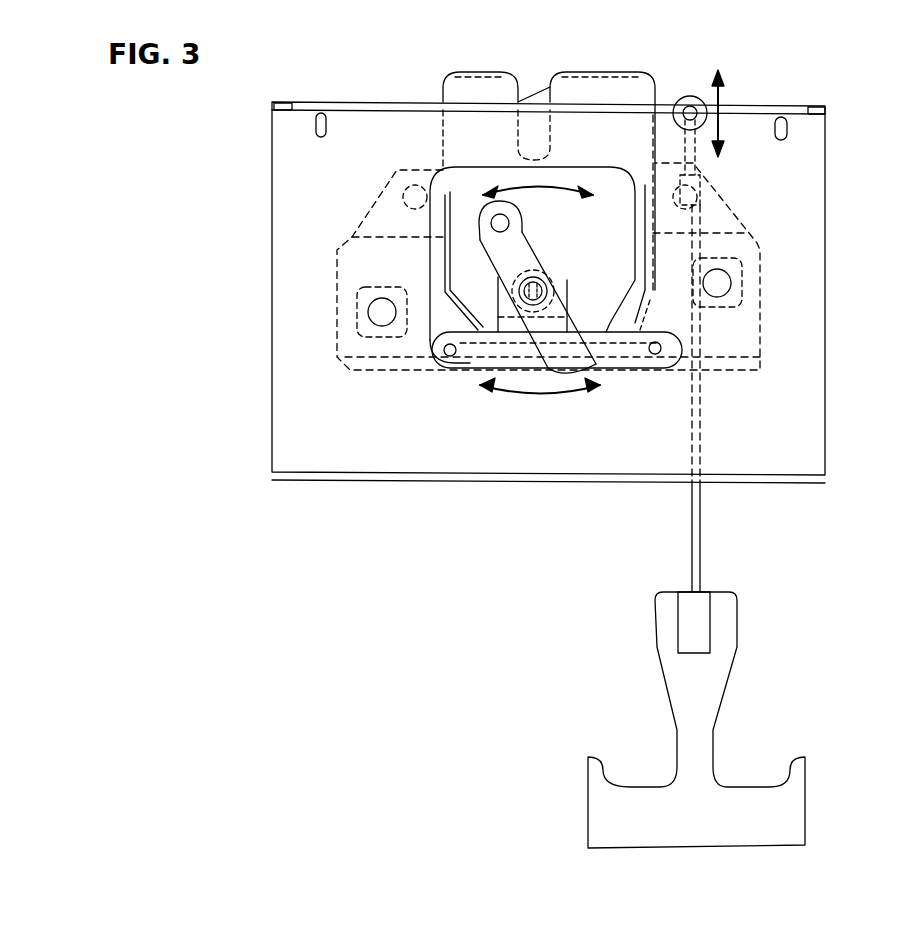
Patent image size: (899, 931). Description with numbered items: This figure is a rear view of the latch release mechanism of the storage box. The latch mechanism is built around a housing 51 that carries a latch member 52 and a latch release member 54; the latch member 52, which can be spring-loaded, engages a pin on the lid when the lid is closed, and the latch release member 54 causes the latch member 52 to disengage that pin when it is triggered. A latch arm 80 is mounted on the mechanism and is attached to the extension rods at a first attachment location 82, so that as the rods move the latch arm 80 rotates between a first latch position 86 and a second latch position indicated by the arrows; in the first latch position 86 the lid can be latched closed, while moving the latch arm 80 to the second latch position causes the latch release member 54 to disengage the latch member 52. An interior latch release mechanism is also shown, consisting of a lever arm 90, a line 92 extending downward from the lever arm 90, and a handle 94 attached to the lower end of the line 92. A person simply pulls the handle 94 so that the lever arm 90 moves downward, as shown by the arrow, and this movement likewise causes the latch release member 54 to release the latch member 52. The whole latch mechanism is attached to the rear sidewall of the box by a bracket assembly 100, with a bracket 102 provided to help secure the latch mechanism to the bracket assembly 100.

The housing 51 is at (462, 92).
The latch member 52 is at (538, 92).
The latch release member 54 is at (657, 102).
The latch arm 80 is at (493, 258).
The first attachment location 82 is at (610, 365).
The first latch position 86 is at (520, 233).
The lever arm 90 is at (688, 93).
The line 92 is at (703, 525).
The handle 94 is at (713, 682).
The bracket assembly 100 is at (803, 262).
The bracket 102 is at (467, 355).